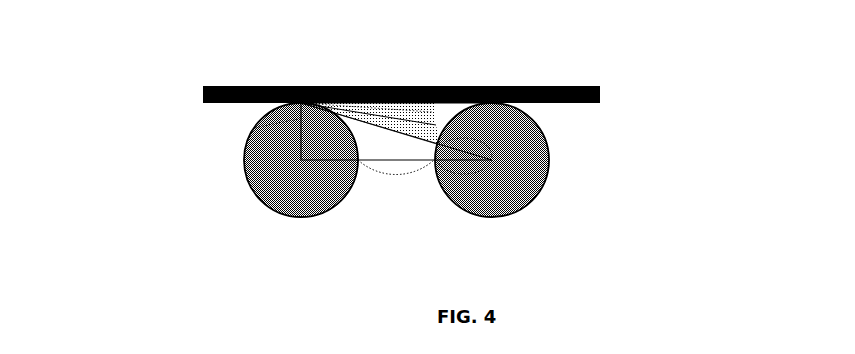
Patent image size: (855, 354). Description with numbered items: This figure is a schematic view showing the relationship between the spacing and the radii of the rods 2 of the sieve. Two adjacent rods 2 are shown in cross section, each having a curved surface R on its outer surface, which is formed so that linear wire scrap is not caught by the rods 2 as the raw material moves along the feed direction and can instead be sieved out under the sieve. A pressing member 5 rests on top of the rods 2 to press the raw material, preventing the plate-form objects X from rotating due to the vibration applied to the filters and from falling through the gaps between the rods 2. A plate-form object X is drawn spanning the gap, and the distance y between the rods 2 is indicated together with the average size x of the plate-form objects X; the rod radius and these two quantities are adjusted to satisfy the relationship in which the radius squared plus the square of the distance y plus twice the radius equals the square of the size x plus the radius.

The pressing member 5 is at (600, 93).
The curved surface R is at (537, 57).
The rod 2 is at (552, 163).
The plate-form object X is at (300, 119).
The average size of plate-form objects x is at (366, 111).
The distance between rods y is at (396, 179).